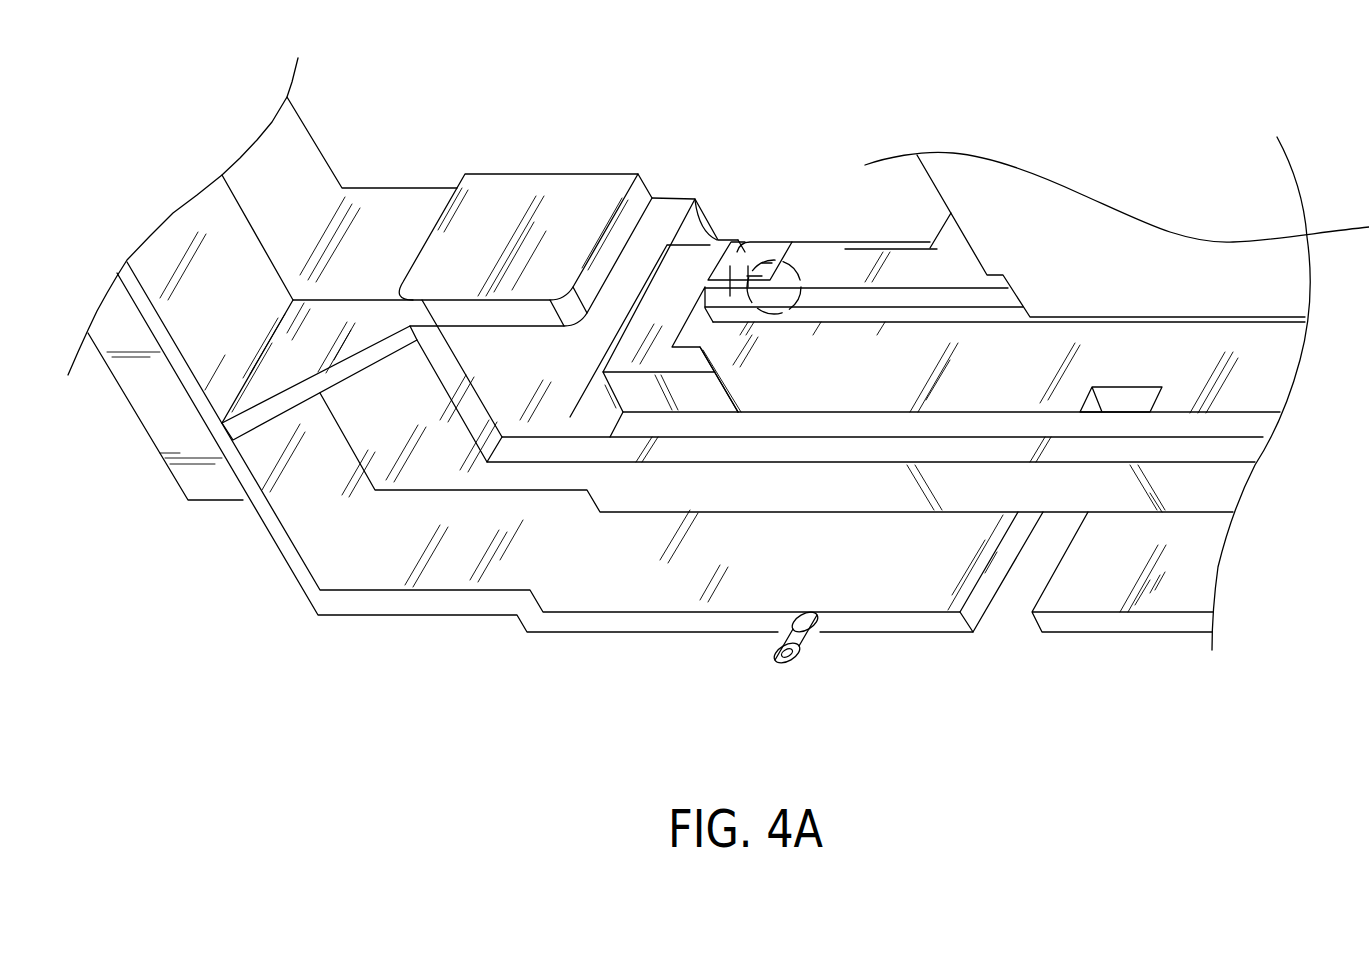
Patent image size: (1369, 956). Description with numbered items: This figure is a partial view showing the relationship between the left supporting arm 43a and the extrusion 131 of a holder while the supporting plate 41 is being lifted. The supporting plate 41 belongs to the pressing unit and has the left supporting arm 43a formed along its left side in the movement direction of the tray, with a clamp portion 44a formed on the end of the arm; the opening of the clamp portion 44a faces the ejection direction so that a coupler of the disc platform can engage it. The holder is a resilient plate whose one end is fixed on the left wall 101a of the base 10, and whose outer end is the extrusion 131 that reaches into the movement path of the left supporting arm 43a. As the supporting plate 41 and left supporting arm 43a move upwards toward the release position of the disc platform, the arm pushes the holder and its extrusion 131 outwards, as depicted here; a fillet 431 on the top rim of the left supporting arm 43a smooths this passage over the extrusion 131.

The base 10 is at (346, 627).
The fillet 431 is at (568, 287).
The extrusion 131 is at (790, 258).
The left supporting arm 43a is at (862, 243).
The clamp portion 44a is at (752, 397).
The supporting plate 41 is at (1077, 227).
The left wall 101a is at (925, 565).